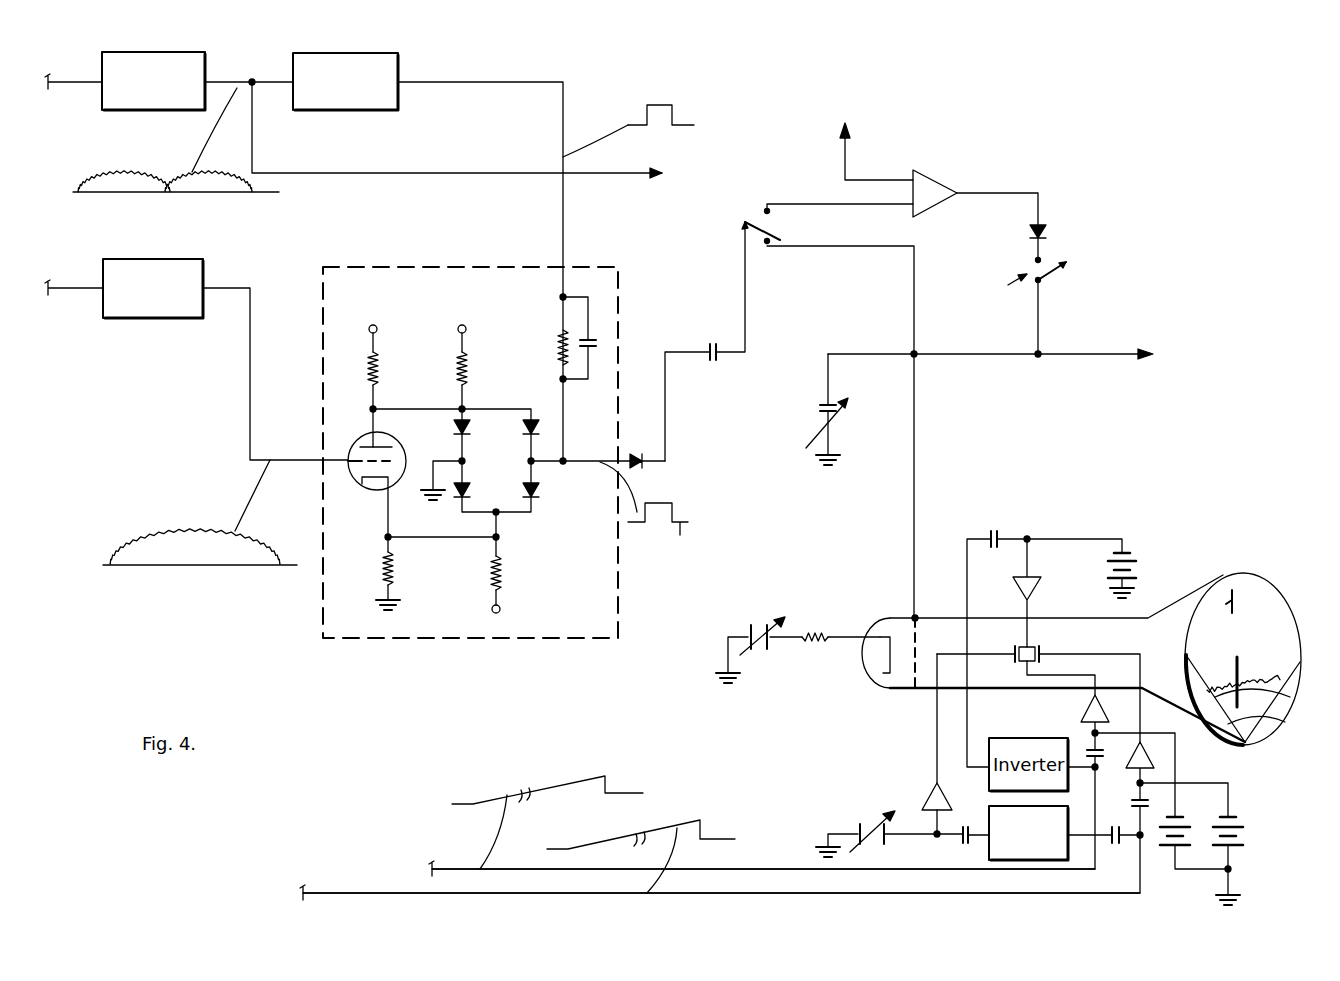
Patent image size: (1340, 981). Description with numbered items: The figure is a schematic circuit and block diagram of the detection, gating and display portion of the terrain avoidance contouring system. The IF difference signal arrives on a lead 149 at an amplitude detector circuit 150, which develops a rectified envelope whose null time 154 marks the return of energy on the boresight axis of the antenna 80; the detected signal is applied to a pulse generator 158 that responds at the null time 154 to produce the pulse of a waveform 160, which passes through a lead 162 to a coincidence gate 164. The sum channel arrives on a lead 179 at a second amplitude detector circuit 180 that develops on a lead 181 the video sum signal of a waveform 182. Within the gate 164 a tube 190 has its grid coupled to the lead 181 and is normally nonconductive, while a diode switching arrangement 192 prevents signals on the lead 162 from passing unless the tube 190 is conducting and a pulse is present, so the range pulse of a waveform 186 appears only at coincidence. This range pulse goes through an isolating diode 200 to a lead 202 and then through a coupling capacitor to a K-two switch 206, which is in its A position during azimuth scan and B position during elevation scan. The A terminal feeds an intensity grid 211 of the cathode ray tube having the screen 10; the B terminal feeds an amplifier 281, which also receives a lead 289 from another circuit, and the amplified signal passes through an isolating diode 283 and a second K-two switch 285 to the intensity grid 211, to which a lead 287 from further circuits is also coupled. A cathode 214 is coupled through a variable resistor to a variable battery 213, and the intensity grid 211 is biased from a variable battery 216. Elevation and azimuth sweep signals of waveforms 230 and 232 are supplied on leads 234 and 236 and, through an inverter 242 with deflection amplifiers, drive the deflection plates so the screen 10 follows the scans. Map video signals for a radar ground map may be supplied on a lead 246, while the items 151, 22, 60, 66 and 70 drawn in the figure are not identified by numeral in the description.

The screen 10 is at (1218, 578).
The electrode 22 is at (1237, 665).
The range arc 60 is at (1285, 722).
The range arc 66 is at (1290, 697).
The deflection plate 70 is at (1232, 600).
The antenna 80 is at (1280, 677).
The lead 149 is at (72, 84).
The amplitude detector circuit 150 is at (197, 62).
The lead 151 is at (278, 88).
The null time 154 is at (167, 192).
The pulse generator 158 is at (393, 62).
The waveform 160 is at (673, 103).
The lead 162 is at (563, 193).
The coincidence gate 164 is at (392, 267).
The lead 179 is at (73, 288).
The amplitude detector circuit 180 is at (152, 318).
The lead 181 is at (250, 397).
The waveform 182 is at (147, 540).
The waveform 186 is at (653, 511).
The tube 190 is at (398, 443).
The diode switching arrangement 192 is at (509, 406).
The isolating diode 200 is at (640, 468).
The lead 202 is at (667, 396).
The K2 switch 206 is at (777, 220).
The intensity grid 211 is at (913, 630).
The variable battery 213 is at (750, 623).
The cathode 214 is at (890, 660).
The variable battery 216 is at (836, 430).
The waveform 230 is at (582, 767).
The waveform 232 is at (699, 820).
The lead 234 is at (455, 866).
The lead 236 is at (385, 890).
The inverter 242 is at (992, 850).
The lead 246 is at (330, 173).
The amplifier 281 is at (935, 178).
The isolating diode 283 is at (1045, 222).
The K2 switch 285 is at (1055, 257).
The lead 287 is at (1093, 354).
The lead 289 is at (845, 160).